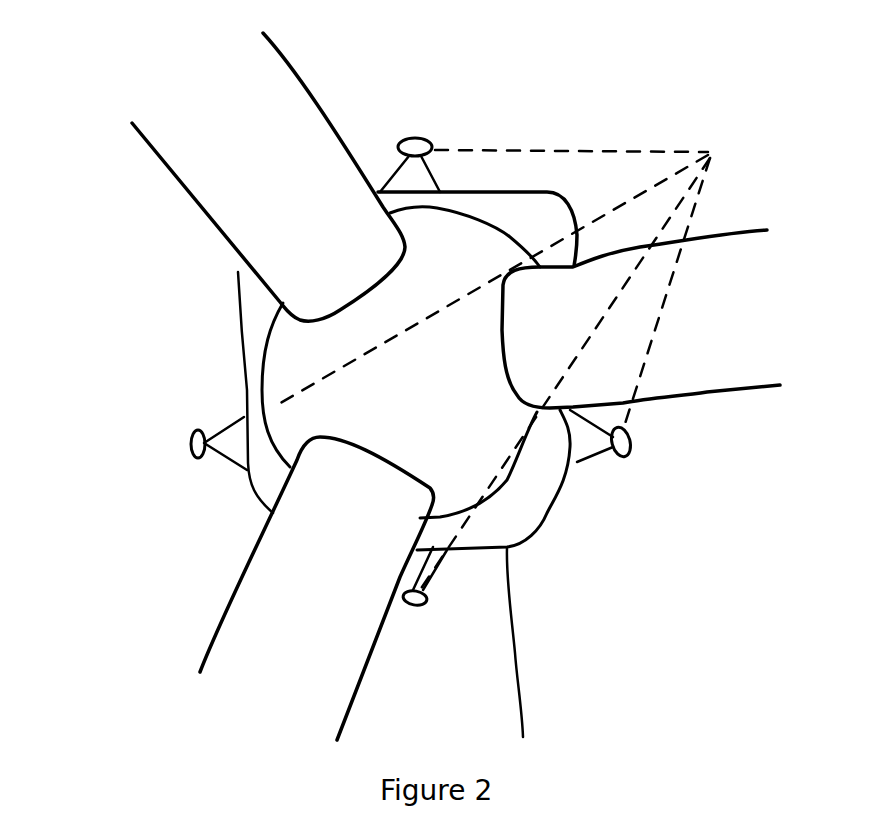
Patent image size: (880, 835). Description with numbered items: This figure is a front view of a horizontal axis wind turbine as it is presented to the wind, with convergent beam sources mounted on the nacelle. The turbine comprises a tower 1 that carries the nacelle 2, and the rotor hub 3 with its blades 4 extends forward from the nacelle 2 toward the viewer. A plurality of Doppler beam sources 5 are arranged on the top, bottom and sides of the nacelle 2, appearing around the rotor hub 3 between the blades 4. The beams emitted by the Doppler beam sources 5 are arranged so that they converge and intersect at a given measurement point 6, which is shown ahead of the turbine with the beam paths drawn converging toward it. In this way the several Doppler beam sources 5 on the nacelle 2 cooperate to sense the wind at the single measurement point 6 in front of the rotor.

The tower 1 is at (518, 680).
The nacelle 2 is at (247, 322).
The rotor hub 3 is at (277, 357).
The blades 4 is at (207, 660).
The Doppler beam sources 5 is at (412, 143).
The measurement point 6 is at (708, 172).